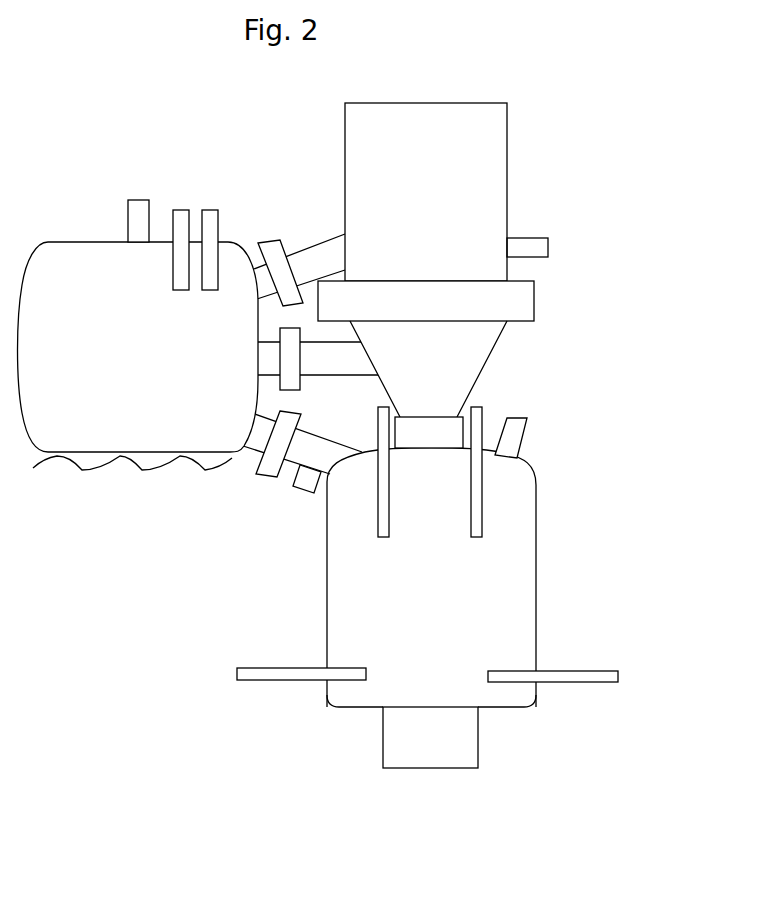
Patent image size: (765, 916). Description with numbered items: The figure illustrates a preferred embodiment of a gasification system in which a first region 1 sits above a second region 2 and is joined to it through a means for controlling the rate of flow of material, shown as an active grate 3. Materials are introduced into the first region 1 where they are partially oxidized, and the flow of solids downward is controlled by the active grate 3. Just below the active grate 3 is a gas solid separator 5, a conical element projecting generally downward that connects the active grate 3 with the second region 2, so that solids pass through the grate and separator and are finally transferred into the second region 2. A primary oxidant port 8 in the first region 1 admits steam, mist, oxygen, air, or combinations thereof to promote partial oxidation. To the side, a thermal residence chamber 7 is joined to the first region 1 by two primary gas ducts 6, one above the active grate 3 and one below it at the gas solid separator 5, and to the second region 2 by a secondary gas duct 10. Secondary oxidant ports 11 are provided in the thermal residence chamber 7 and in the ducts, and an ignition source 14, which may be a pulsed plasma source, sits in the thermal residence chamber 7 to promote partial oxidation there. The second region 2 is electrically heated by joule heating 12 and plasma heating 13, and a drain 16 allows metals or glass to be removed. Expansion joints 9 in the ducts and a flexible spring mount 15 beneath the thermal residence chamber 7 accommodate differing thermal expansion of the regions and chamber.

The first region 1 is at (408, 68).
The second region 2 is at (437, 599).
The active grate 3 is at (426, 301).
The gas solid separator 5 is at (428, 369).
The primary gas duct 6 is at (312, 306).
The thermal residence chamber 7 is at (138, 347).
The primary oxidant port 8 is at (530, 248).
The expansion joint 9 is at (359, 358).
The secondary gas duct 10 is at (301, 443).
The secondary oxidant port 11 is at (311, 490).
The joule heating 12 is at (625, 707).
The plasma heating 13 is at (383, 523).
The ignition source 14 is at (179, 219).
The flexible spring mount 15 is at (82, 472).
The drain 16 is at (430, 737).